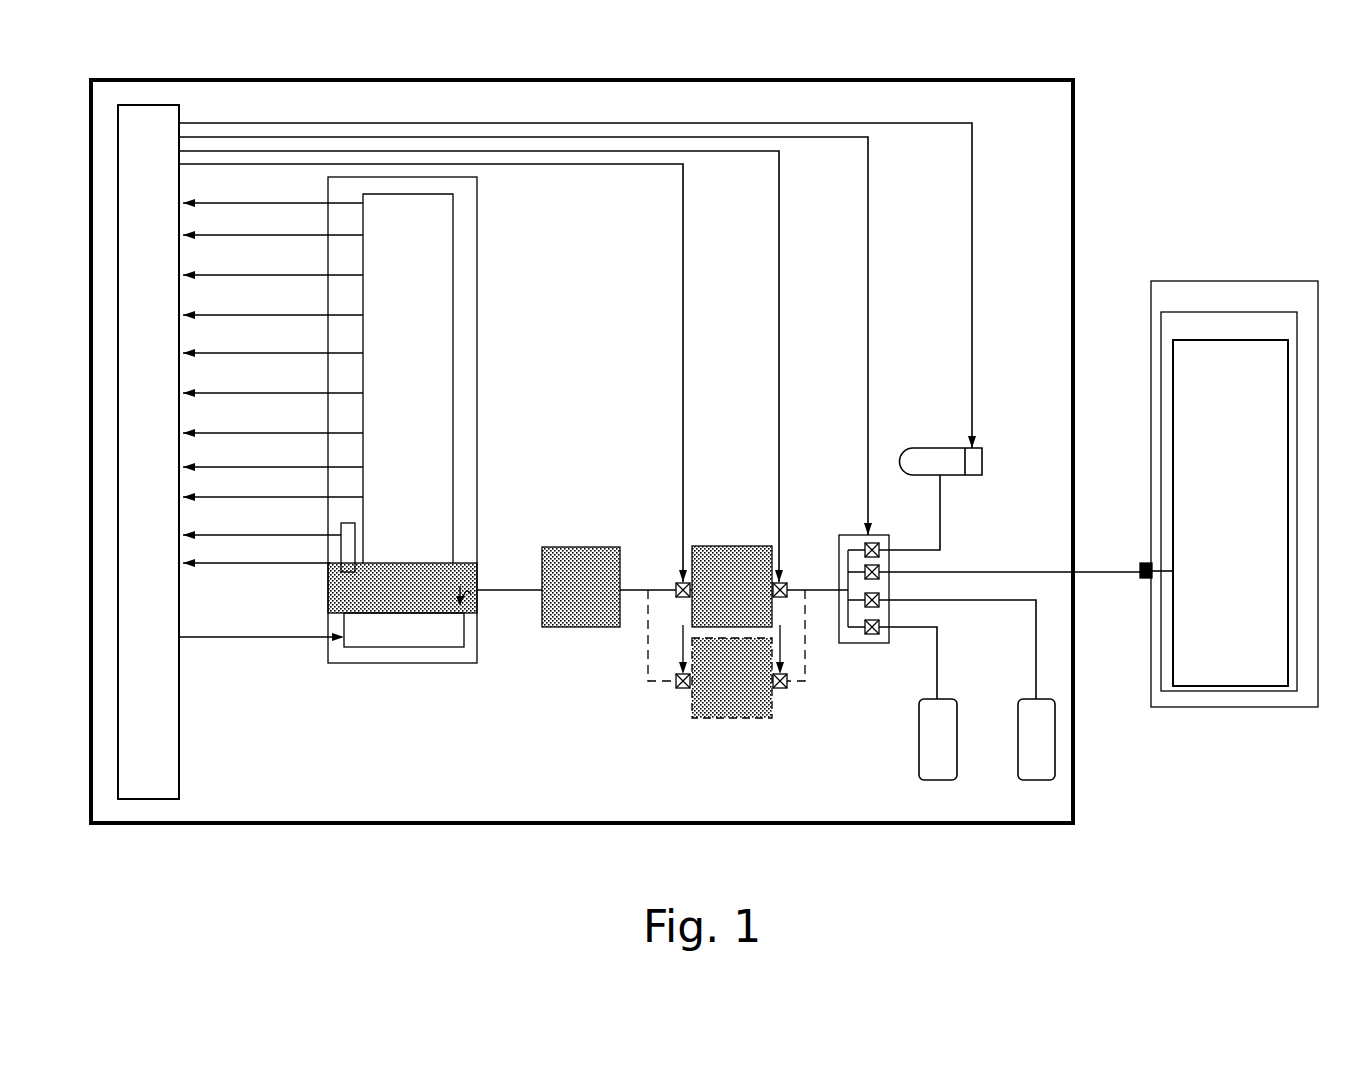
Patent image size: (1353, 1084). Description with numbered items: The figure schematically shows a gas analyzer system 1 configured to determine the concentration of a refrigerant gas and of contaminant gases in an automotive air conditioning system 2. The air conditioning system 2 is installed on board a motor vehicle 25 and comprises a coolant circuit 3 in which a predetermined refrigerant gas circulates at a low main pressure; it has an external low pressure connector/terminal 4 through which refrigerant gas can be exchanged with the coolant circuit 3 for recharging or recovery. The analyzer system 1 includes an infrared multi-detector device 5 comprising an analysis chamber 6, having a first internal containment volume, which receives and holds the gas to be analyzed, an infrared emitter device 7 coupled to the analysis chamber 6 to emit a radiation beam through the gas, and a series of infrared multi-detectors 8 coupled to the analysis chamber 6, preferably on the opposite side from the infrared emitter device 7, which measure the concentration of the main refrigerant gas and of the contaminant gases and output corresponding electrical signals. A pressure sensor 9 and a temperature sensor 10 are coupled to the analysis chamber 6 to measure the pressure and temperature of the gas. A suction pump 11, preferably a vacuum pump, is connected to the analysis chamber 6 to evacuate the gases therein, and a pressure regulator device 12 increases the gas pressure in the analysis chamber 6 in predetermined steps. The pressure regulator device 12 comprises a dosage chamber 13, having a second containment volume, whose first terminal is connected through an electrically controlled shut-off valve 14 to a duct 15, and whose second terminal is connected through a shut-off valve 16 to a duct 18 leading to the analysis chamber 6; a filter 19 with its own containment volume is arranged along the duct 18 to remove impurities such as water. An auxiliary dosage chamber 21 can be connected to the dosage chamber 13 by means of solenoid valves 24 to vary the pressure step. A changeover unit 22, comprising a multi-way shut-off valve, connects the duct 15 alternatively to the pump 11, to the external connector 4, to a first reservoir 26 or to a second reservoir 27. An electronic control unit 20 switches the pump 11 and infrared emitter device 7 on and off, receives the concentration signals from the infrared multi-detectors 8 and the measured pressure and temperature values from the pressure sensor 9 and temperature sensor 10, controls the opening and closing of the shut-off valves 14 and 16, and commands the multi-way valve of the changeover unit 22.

The gas analyzer system 1 is at (1083, 152).
The automotive air conditioning system 2 is at (1162, 376).
The coolant circuit 3 is at (1230, 513).
The external low pressure connector/terminal 4 is at (1146, 578).
The infrared multi-detector device 5 is at (399, 682).
The analysis chamber 6 is at (479, 598).
The infrared emitter device 7 is at (430, 640).
The infrared multi-detectors 8 is at (437, 251).
The pressure sensor 9 is at (350, 540).
The temperature sensor 10 is at (333, 560).
The suction pump 11 is at (941, 461).
The pressure regulator device 12 is at (654, 554).
The dosage chamber 13 is at (750, 552).
The electrically controlled shut-off valve 14 is at (785, 567).
The duct 15 is at (822, 591).
The electrically controlled shut-off valve 16 is at (677, 570).
The duct 18 is at (500, 591).
The filter 19 is at (578, 592).
The electronic control unit 20 is at (547, 452).
The auxiliary dosage chamber 21 is at (740, 693).
The changeover unit 22 is at (858, 643).
The solenoid valves 24 is at (685, 692).
The motor vehicle 25 is at (1170, 282).
The first reservoir 26 is at (938, 739).
The second reservoir 27 is at (1036, 739).